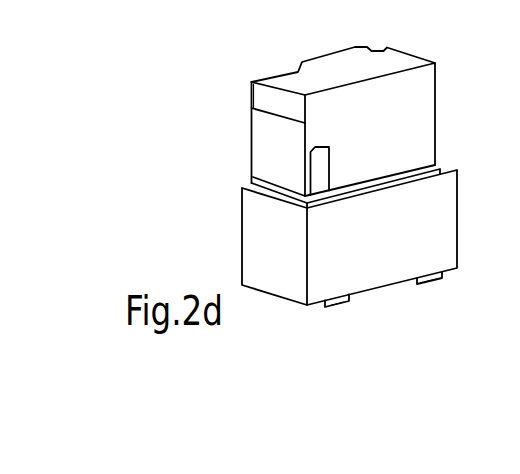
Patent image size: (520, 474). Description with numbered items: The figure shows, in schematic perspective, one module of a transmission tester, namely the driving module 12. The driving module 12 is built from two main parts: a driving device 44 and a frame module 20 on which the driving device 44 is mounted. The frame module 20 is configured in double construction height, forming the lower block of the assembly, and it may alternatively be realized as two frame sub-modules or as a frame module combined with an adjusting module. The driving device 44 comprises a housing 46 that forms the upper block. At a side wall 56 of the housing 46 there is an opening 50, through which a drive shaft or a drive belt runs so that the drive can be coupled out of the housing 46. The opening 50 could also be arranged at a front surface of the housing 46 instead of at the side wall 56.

The driving module 12 is at (236, 122).
The frame module 20 is at (387, 280).
The driving device 44 is at (438, 97).
The housing 46 is at (385, 50).
The opening 50 is at (318, 172).
The side wall 56 is at (427, 133).